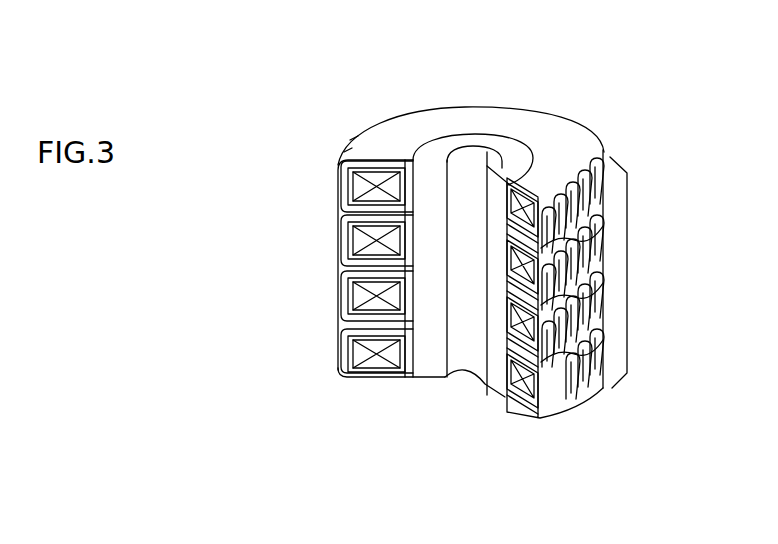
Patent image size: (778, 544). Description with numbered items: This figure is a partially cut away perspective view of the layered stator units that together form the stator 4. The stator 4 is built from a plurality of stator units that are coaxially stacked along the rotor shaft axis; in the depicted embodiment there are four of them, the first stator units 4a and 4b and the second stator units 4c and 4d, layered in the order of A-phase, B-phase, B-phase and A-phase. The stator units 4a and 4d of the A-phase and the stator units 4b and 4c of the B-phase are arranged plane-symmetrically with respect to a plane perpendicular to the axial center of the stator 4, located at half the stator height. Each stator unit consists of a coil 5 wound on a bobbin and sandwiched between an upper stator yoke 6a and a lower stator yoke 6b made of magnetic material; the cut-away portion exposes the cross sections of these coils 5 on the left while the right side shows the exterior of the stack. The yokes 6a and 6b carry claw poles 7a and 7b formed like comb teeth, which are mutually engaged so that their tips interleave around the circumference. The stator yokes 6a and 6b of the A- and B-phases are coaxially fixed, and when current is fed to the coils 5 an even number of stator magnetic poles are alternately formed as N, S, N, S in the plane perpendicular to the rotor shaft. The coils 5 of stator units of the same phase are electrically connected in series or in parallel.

The stator 4 is at (662, 303).
The first stator unit 4a is at (335, 183).
The first stator unit 4b is at (335, 240).
The second stator unit 4c is at (335, 298).
The second stator unit 4d is at (333, 352).
The coil 5 is at (375, 352).
The upper stator yoke 6a is at (548, 142).
The lower stator yoke 6b is at (512, 233).
The claw pole 7a is at (596, 390).
The claw pole 7b is at (578, 405).